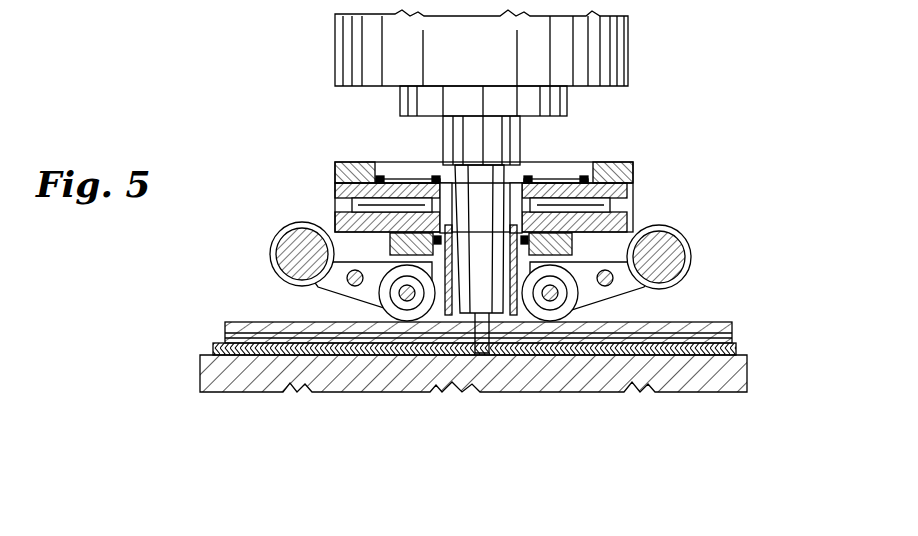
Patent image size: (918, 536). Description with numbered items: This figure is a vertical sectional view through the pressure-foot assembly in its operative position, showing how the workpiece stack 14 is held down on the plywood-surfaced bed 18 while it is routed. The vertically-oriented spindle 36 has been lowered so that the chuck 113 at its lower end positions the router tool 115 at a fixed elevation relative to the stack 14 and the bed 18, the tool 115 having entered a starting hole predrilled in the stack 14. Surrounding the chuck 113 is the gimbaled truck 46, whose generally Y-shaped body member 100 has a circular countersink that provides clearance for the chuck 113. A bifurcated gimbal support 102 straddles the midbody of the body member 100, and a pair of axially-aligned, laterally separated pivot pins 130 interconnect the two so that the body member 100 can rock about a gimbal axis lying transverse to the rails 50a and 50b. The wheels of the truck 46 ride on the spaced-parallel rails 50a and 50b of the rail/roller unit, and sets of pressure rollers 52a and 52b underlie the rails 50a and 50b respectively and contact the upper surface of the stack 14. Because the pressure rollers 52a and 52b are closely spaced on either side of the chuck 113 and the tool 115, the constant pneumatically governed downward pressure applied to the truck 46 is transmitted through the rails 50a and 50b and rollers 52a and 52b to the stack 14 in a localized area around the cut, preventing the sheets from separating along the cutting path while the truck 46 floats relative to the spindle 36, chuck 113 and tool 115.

The spindle 36 is at (641, 52).
The chuck 113 is at (520, 156).
The router tool 115 is at (487, 360).
The truck 46 is at (646, 162).
The body member 100 is at (568, 185).
The gimbal support 102 is at (633, 223).
The pivot pins 130 is at (345, 193).
The rail 50a is at (388, 243).
The rail 50b is at (575, 254).
The pressure rollers 52a is at (400, 321).
The pressure rollers 52b is at (556, 321).
The stack 14 is at (708, 321).
The bed 18 is at (737, 352).